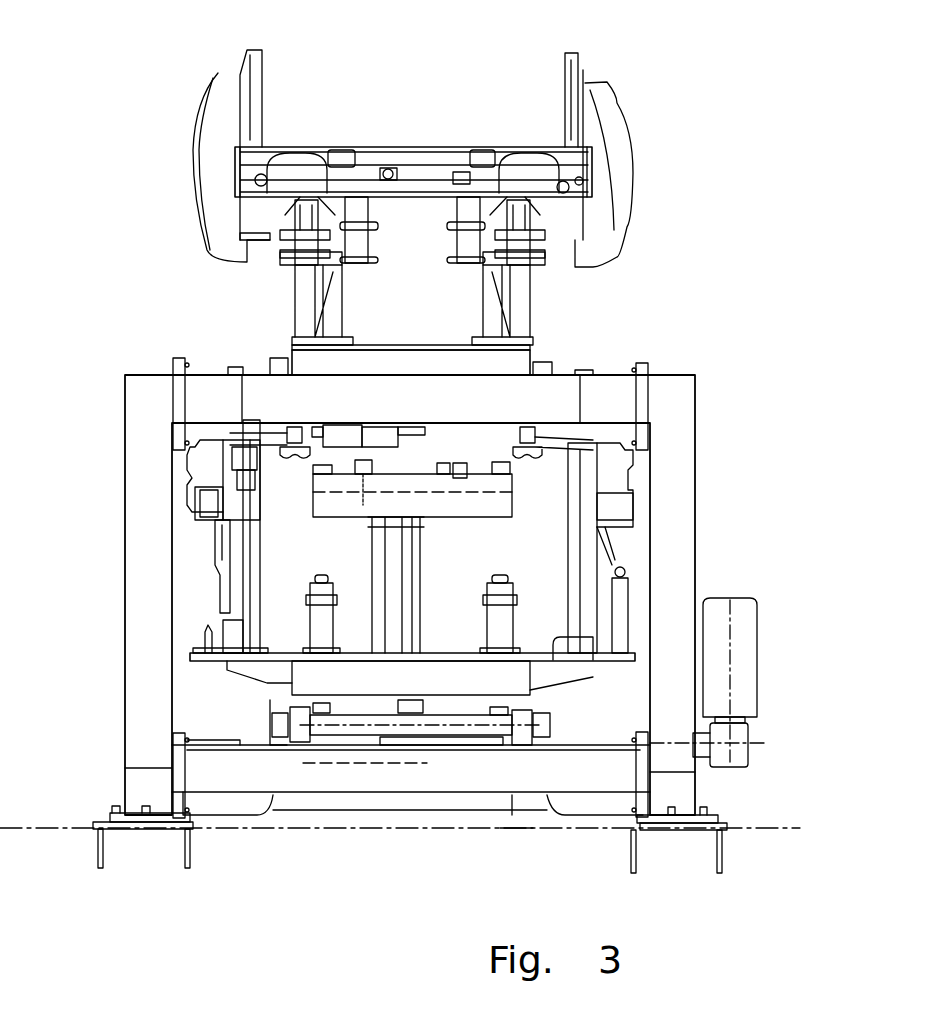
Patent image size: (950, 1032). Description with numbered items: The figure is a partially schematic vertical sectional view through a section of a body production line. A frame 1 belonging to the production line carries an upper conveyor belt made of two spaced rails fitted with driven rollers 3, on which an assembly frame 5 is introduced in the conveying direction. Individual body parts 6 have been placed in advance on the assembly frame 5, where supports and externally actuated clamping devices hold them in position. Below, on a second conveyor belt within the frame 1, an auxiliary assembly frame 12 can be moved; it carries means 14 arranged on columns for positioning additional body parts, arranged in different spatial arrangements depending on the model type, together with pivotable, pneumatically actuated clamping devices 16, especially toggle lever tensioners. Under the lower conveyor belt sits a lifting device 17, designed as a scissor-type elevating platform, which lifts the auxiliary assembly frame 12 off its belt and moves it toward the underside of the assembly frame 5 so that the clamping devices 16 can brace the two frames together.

The frame 1 is at (682, 457).
The rollers 3 is at (545, 718).
The assembly frame 5 is at (383, 355).
The body parts 6 is at (697, 172).
The auxiliary assembly frame 12 is at (363, 675).
The means for positioning 14 is at (222, 565).
The pivotable clamping device 16 is at (603, 565).
The lifting device 17 is at (455, 810).